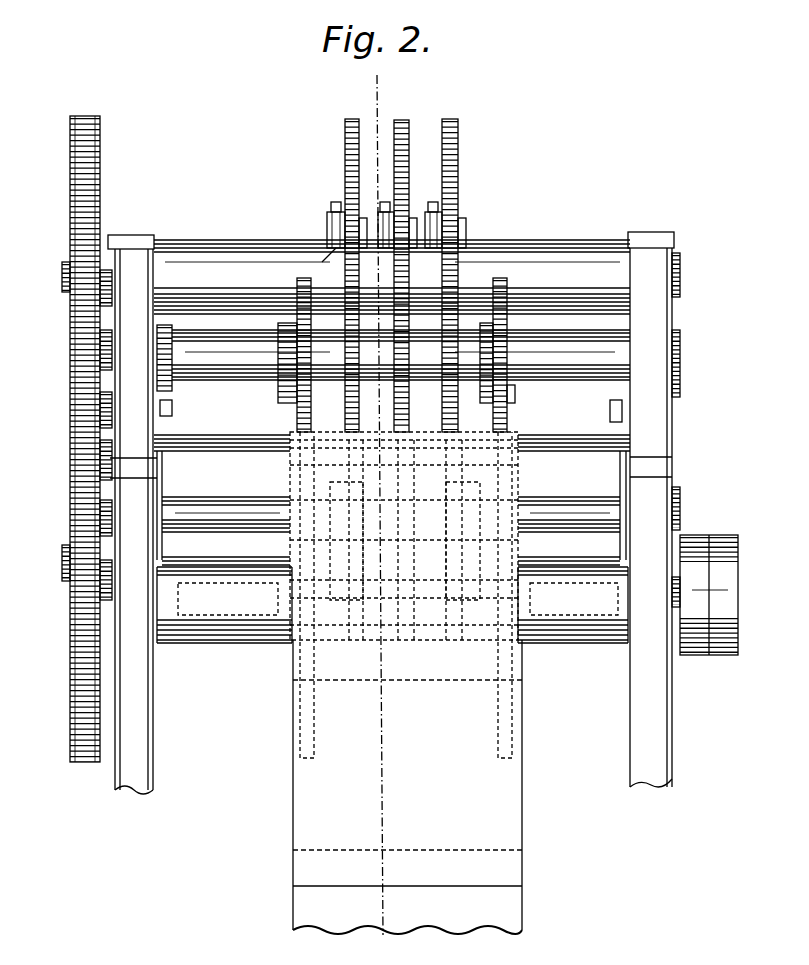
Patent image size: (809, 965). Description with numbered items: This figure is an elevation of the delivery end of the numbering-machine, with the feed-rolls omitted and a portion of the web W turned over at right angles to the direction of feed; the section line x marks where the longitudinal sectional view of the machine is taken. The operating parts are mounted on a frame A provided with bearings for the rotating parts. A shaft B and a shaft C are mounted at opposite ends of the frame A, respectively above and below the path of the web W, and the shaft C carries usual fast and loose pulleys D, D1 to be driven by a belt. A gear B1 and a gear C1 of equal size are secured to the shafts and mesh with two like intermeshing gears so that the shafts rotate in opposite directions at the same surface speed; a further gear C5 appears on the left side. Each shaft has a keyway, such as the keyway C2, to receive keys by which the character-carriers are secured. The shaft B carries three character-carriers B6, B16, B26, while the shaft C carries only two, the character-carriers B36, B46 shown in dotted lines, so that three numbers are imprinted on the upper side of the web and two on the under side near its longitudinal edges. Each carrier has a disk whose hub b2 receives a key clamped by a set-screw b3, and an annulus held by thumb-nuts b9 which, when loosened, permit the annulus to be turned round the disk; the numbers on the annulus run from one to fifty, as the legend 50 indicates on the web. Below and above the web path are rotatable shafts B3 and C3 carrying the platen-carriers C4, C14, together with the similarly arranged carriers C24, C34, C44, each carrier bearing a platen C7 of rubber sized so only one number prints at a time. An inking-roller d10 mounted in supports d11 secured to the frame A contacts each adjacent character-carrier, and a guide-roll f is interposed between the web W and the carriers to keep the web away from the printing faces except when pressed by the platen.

The section line x- x is at (378, 512).
The gear B1 is at (100, 150).
The pinion on gear shaft C5 is at (74, 388).
The gear C1 is at (74, 705).
The frame A is at (130, 235).
The shaft B is at (528, 246).
The character-carrier B6 is at (345, 150).
The character-carrier B16 is at (385, 275).
The character-carrier B26 is at (458, 152).
The hub b2 is at (330, 215).
The set-screw b3 is at (383, 210).
The thumb-nut b9 is at (321, 262).
The platen C7 is at (302, 278).
The rotatable shaft C3 is at (393, 369).
The pinion on middle shaft C34 is at (280, 398).
The pinion on middle shaft C44 is at (508, 406).
The keyway C2 is at (505, 404).
The platen-carrier C14 is at (410, 445).
The support d11 is at (168, 488).
The guide-roll f is at (272, 452).
The platen-carrier C4 is at (291, 478).
The lower roller C24 is at (569, 501).
The rotatable shaft B3 is at (600, 512).
The shaft C is at (213, 632).
The fast pulley D is at (698, 535).
The loose pulley D1 is at (726, 535).
The web W is at (528, 778).
The carrier plate 50 is at (404, 656).
The inking-roller d10 is at (292, 648).
The character-carrier B36 is at (308, 722).
The character-carrier B46 is at (512, 714).